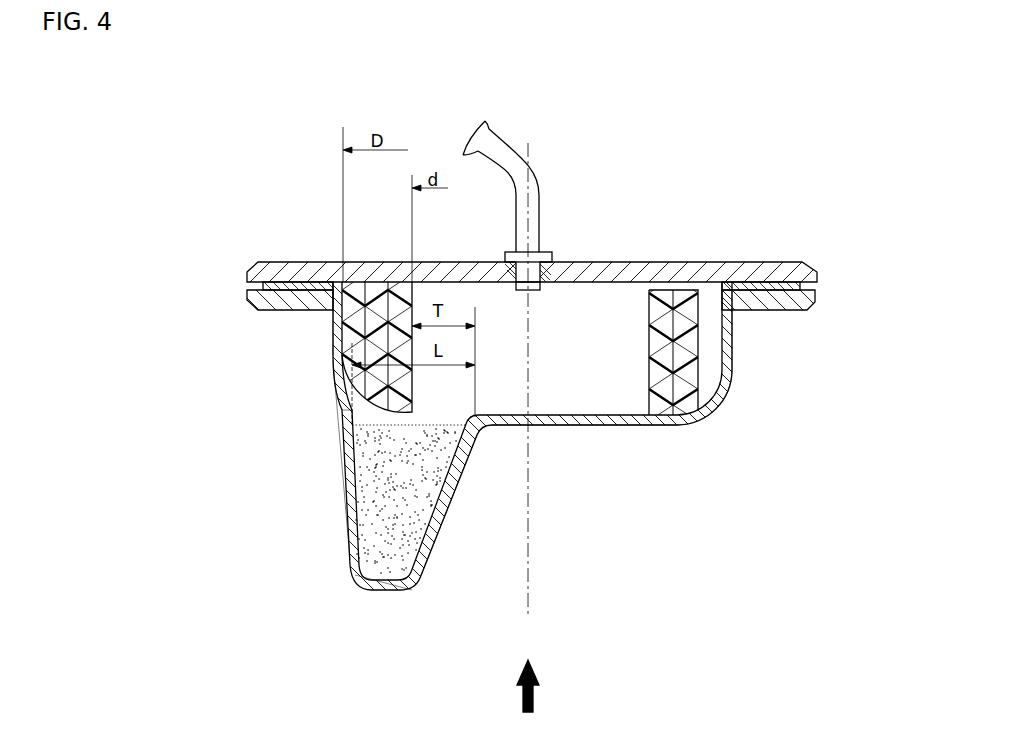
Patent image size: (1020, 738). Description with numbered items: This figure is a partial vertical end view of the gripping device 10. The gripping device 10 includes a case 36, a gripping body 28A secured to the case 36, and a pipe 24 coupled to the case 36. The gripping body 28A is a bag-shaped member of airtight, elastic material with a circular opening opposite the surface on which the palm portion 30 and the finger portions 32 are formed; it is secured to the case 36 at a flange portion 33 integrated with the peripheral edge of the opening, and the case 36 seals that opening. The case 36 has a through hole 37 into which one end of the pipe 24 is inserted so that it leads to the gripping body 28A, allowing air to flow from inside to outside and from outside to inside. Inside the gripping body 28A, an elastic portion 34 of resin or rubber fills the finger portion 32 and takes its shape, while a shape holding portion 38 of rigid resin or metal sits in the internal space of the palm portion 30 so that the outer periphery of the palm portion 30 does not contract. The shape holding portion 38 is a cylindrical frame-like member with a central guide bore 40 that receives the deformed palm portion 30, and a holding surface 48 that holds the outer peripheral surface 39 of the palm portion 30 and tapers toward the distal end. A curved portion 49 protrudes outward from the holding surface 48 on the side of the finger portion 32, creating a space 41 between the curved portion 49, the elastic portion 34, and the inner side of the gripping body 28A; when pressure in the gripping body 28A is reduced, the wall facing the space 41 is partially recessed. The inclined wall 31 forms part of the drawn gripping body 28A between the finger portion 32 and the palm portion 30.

The gripping device 10 is at (758, 199).
The pipe 24 is at (487, 145).
The gripping body 28A is at (331, 445).
The palm portion 30 is at (497, 428).
The inclined wall 31 is at (447, 533).
The finger portion 32 is at (382, 591).
The flange portion 33 is at (245, 286).
The elastic portion 34 is at (384, 471).
The case 36 is at (257, 263).
The through hole 37 is at (539, 266).
The shape holding portion 38 is at (416, 288).
The outer peripheral surface 39 is at (333, 353).
The guide bore 40 is at (650, 350).
The space 41 is at (363, 405).
The holding surface 48 is at (693, 303).
The curved portion 49 is at (690, 403).